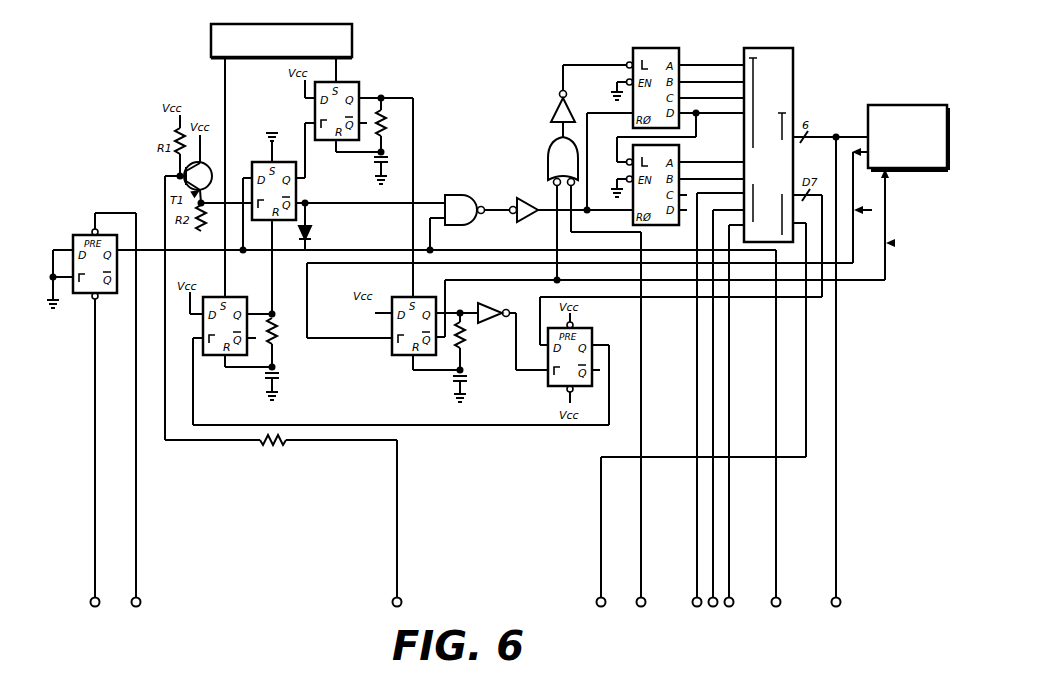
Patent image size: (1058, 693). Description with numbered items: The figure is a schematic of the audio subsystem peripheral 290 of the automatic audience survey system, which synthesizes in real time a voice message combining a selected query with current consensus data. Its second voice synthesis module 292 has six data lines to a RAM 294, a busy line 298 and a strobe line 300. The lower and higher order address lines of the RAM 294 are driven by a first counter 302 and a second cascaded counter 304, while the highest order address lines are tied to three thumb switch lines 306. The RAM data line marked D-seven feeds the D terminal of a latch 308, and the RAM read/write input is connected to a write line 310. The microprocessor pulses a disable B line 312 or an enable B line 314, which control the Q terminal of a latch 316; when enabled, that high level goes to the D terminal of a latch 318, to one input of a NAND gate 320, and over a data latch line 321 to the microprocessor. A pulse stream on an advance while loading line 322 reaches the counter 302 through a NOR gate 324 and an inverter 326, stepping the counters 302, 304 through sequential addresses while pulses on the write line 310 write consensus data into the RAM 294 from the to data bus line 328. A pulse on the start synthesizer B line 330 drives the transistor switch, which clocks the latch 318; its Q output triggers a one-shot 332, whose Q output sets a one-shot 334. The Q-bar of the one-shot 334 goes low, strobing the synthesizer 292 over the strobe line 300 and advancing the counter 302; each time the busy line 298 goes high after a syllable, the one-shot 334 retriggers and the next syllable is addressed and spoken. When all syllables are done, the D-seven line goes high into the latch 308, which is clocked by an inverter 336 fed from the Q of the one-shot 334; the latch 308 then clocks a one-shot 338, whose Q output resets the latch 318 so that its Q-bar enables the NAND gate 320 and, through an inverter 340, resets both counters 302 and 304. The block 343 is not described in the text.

The timing/control block 343 is at (298, 53).
The one-shot 332 is at (359, 86).
The latch 318 is at (296, 189).
The latch 316 is at (83, 296).
The one-shot 338 is at (212, 358).
The one-shot 334 is at (400, 356).
The inverter 336 is at (482, 302).
The latch 308 is at (580, 328).
The NAND gate 320 is at (455, 226).
The inverter 340 is at (528, 197).
The inverter 326 is at (551, 108).
The NOR gate 324 is at (548, 150).
The first counter 302 is at (646, 48).
The second cascaded counter 304 is at (682, 146).
The RAM 294 is at (778, 48).
The second voice synthesis module 292 is at (917, 105).
The busy line 298 is at (856, 193).
The strobe line 300 is at (886, 268).
The advance while loading line 322 is at (640, 432).
The write line 310 is at (600, 465).
The thumb switch lines 306 is at (730, 471).
The data latch line 321 is at (777, 478).
The to data bus line 328 is at (838, 478).
The disable B line 312 is at (94, 458).
The enable B line 314 is at (137, 472).
The start synthesizer B line 330 is at (398, 483).
The audio subsystem peripheral 290 is at (917, 480).